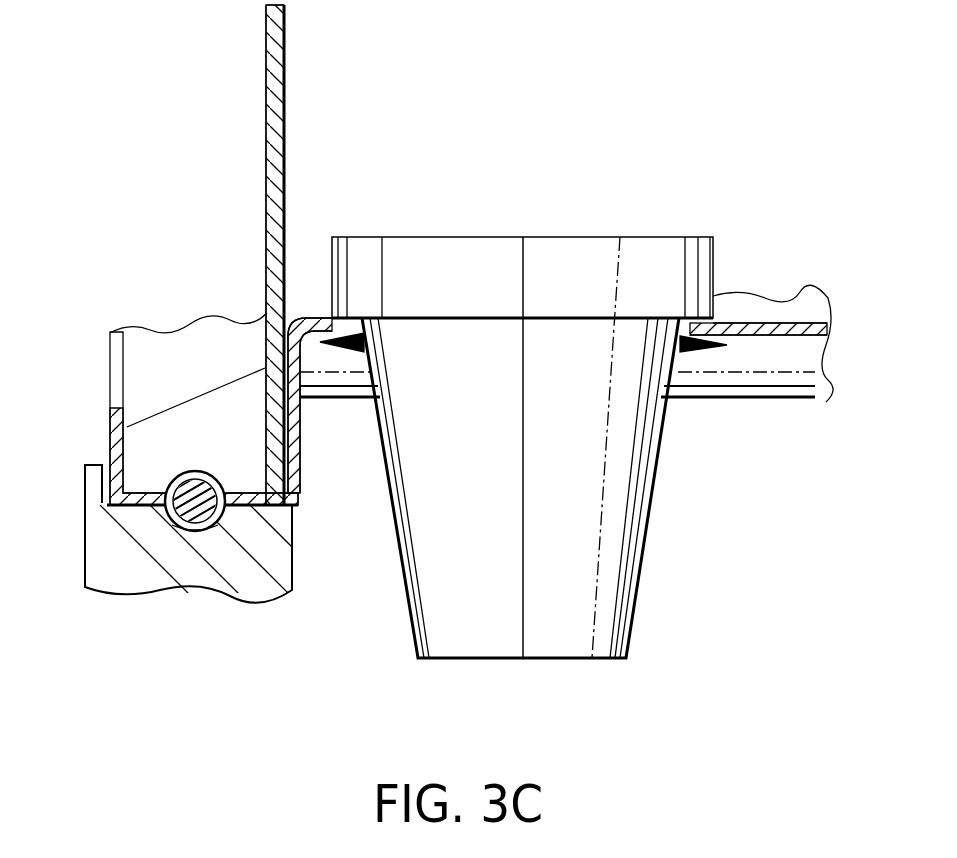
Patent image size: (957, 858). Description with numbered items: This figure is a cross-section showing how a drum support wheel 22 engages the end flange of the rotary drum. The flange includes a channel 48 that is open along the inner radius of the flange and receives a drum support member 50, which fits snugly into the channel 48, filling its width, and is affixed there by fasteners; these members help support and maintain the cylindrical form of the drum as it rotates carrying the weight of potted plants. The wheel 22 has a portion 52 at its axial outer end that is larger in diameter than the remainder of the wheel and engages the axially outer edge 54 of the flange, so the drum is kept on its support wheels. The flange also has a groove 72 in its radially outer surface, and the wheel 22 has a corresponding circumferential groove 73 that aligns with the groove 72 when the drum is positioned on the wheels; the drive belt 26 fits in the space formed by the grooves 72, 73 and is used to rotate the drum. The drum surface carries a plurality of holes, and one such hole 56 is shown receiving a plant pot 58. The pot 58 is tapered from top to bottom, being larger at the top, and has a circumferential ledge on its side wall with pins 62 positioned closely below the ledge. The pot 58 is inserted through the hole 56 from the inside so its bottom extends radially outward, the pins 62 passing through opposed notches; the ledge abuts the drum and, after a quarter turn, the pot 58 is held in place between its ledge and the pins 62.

The drum support wheel 22 is at (115, 572).
The drive belt 26 is at (180, 484).
The channel 48 is at (197, 427).
The drum support member 50 is at (268, 44).
The portion 52 is at (95, 483).
The axially outer edge 54 is at (112, 427).
The hole 56 is at (412, 320).
The plant pot 58 is at (614, 500).
The pin 62 is at (690, 346).
The groove 72 is at (207, 479).
The circumferential groove 73 is at (196, 528).